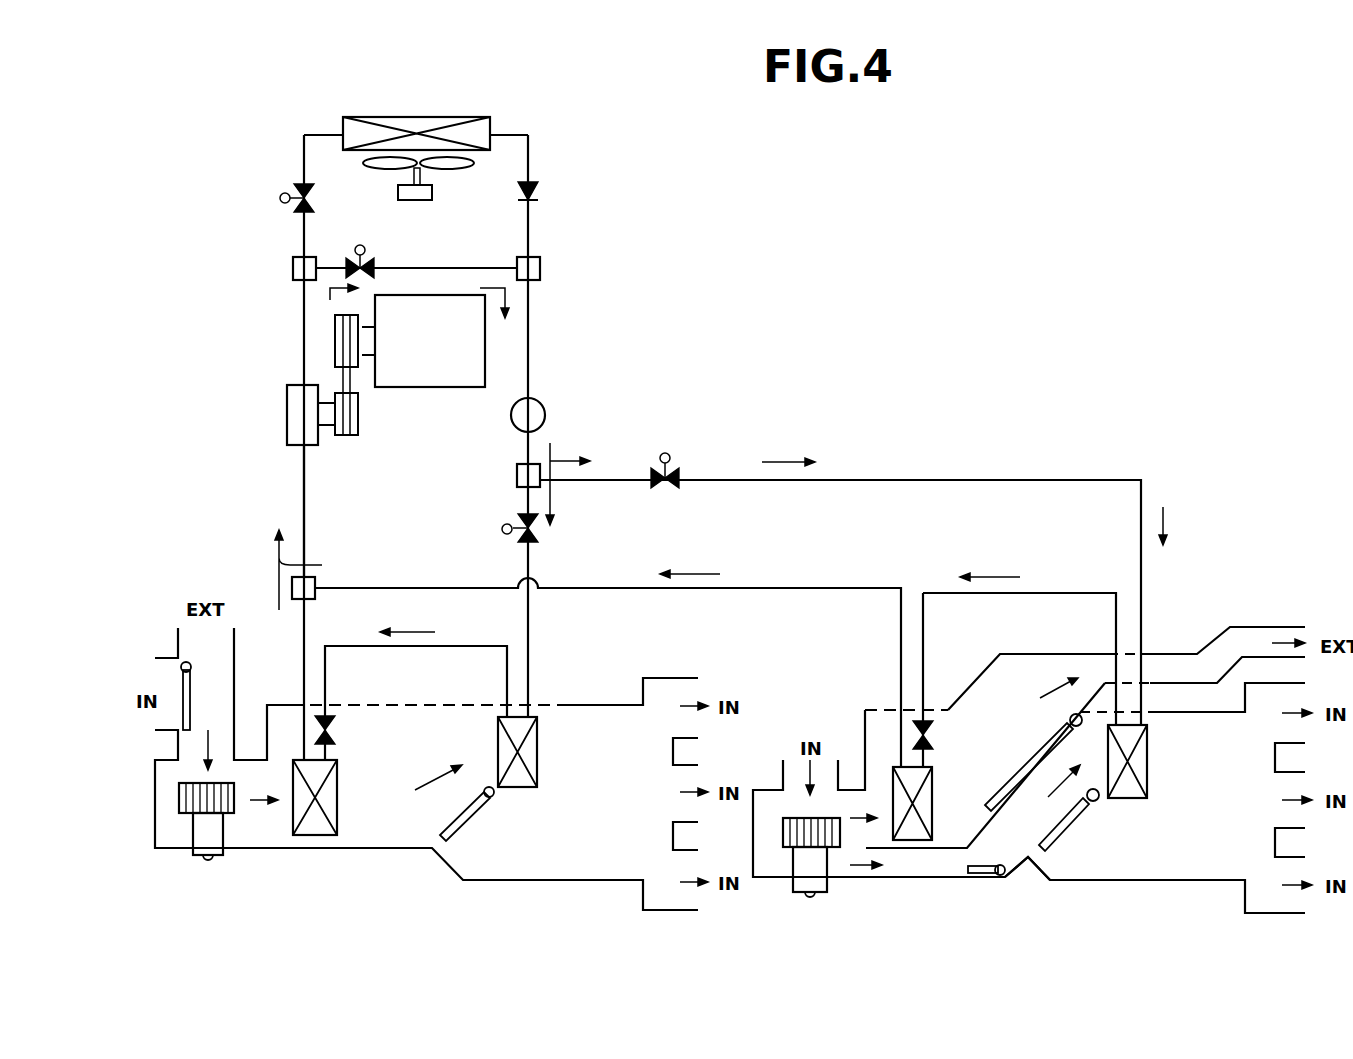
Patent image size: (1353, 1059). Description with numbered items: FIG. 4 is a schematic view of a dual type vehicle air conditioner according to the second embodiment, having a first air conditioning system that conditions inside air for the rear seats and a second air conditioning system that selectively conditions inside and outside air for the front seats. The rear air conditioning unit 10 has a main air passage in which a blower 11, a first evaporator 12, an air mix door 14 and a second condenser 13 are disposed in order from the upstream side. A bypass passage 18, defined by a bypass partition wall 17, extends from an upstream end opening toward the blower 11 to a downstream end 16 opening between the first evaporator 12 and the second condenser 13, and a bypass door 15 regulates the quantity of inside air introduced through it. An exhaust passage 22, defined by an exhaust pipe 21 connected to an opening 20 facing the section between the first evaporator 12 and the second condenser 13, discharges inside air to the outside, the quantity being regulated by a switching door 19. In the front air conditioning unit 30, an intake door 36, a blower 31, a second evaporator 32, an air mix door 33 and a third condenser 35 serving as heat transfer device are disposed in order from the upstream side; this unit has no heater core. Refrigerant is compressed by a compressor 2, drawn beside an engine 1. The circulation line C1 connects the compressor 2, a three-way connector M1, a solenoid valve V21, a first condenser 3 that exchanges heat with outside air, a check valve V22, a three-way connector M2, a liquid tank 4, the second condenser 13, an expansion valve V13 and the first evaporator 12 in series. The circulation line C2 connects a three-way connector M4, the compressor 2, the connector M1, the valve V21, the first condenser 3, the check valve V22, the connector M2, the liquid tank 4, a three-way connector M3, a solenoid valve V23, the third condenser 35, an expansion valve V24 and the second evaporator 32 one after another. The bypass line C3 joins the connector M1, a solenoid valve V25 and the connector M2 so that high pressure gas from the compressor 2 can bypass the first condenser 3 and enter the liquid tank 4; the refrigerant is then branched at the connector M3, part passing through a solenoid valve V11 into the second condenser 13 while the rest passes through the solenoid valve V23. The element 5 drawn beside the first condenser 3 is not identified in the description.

The engine 1 is at (422, 388).
The compressor 2 is at (287, 400).
The first condenser 3 is at (467, 117).
The liquid tank 4 is at (548, 405).
The fan 5 is at (382, 170).
The rear air conditioning unit 10 is at (1202, 883).
The blower 11 is at (785, 848).
The first evaporator 12 is at (900, 765).
The second condenser 13 is at (1128, 803).
The air mix door 14 is at (1072, 827).
The bypass door 15 is at (978, 875).
The downstream end 16 is at (1013, 833).
The bypass partition wall 17 is at (911, 850).
The bypass passage 18 is at (937, 862).
The switching door 19 is at (1033, 753).
The opening 20 is at (1005, 703).
The exhaust pipe 21 is at (1263, 625).
The exhaust passage 22 is at (1168, 665).
The front air conditioning unit 30 is at (368, 848).
The blower 31 is at (190, 815).
The second evaporator 32 is at (307, 838).
The air mix door 33 is at (470, 815).
The third condenser 35 is at (540, 735).
The intake door 36 is at (190, 695).
The solenoid valve V11 is at (668, 452).
The expansion valve V13 is at (930, 735).
The solenoid valve V21 is at (295, 190).
The check valve V22 is at (545, 195).
The solenoid valve V23 is at (515, 535).
The expansion valve V24 is at (335, 715).
The solenoid valve V25 is at (372, 260).
The three-way connector M1 is at (297, 282).
The three-way connector M2 is at (538, 282).
The three-way connector M3 is at (516, 475).
The three-way connector M4 is at (318, 578).
The refrigerant circulation line C1 is at (918, 478).
The refrigerant circulation line C2 is at (300, 478).
The refrigerant bypass line C3 is at (470, 268).